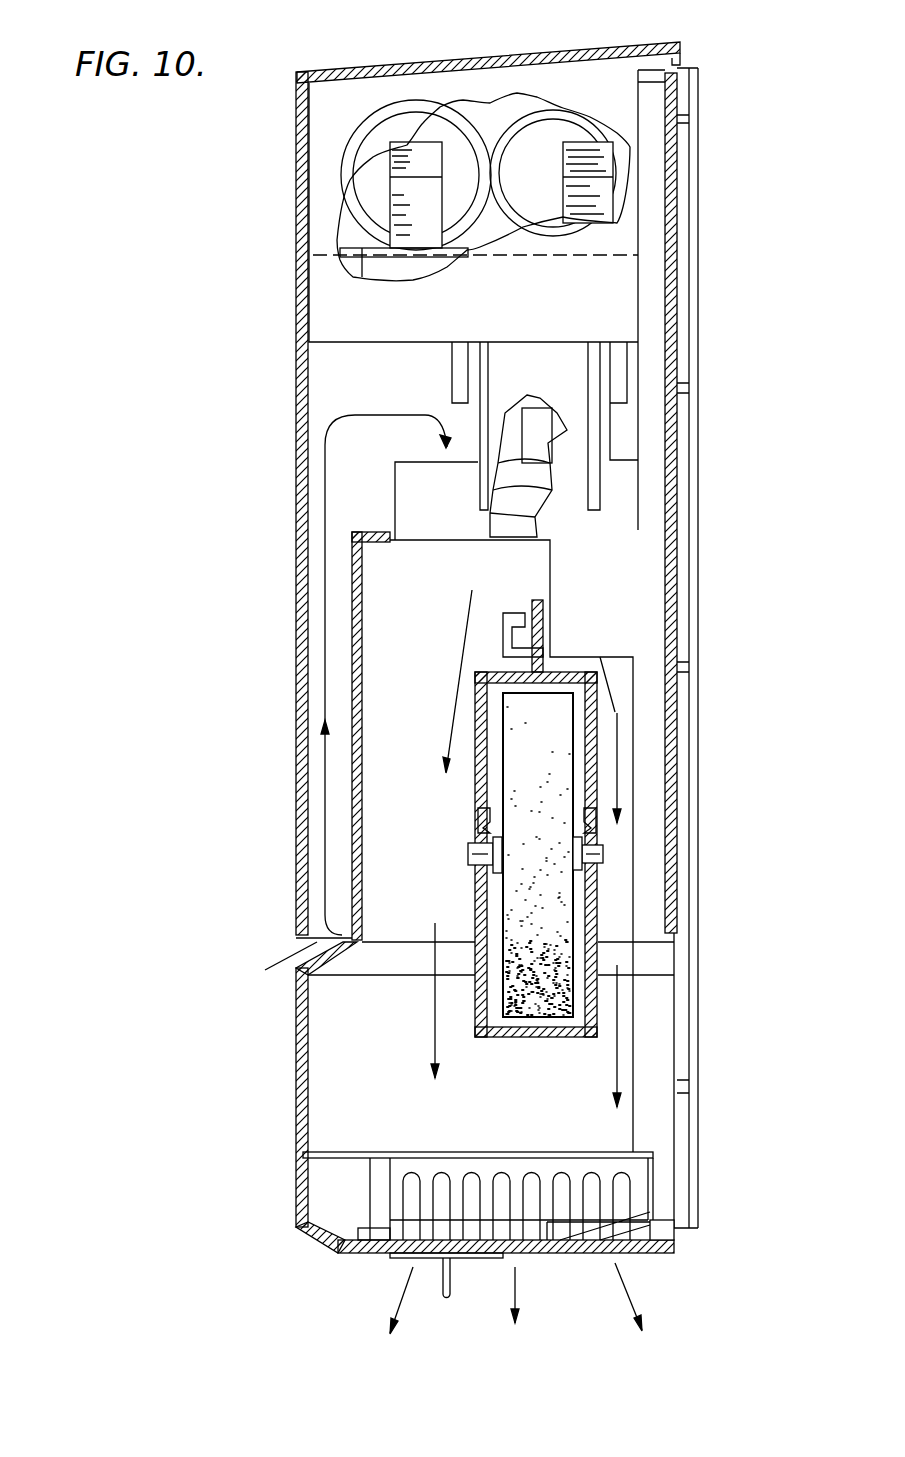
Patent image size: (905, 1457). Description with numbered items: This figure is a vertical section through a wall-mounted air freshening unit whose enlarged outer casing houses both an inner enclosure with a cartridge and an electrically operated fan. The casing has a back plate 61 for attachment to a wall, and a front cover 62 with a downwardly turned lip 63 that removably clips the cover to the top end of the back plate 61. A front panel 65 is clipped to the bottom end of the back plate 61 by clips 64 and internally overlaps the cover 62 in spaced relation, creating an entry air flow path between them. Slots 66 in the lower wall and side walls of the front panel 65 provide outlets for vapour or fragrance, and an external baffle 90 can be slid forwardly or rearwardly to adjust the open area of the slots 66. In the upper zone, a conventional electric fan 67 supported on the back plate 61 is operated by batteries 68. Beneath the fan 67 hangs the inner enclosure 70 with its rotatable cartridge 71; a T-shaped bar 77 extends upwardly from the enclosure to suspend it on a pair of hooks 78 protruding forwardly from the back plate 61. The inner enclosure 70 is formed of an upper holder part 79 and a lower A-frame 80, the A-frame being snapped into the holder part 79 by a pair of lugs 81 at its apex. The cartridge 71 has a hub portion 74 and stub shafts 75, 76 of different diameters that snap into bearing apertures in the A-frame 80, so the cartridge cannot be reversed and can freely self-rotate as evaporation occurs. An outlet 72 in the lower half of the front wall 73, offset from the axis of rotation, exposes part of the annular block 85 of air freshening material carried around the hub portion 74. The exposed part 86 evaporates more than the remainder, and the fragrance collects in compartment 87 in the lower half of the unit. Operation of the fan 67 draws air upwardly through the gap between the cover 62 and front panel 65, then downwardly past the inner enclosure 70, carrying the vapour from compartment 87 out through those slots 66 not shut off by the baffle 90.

The back plate 61 is at (676, 493).
The front cover 62 is at (296, 487).
The downwardly turned lip 63 is at (687, 56).
The clips 64 is at (563, 1223).
The front panel 65 is at (296, 1075).
The slots 66 is at (412, 1188).
The electric fan 67 is at (530, 487).
The batteries 68 is at (537, 113).
The inner enclosure 70 is at (620, 747).
The rotatable cartridge 71 is at (572, 978).
The outlet 72 is at (475, 905).
The front wall 73 is at (475, 878).
The hub portion 74 is at (605, 850).
The stub shaft 75 is at (487, 845).
The stub shaft 76 is at (605, 858).
The T-shaped bar 77 is at (537, 600).
The hooks 78 is at (512, 630).
The upper holder part 79 is at (620, 713).
The A-frame 80 is at (620, 908).
The lugs 81 is at (478, 812).
The annular block of air freshening material 85 is at (512, 708).
The exposed part 86 is at (502, 980).
The compartment 87 is at (395, 912).
The external baffle 90 is at (392, 1260).